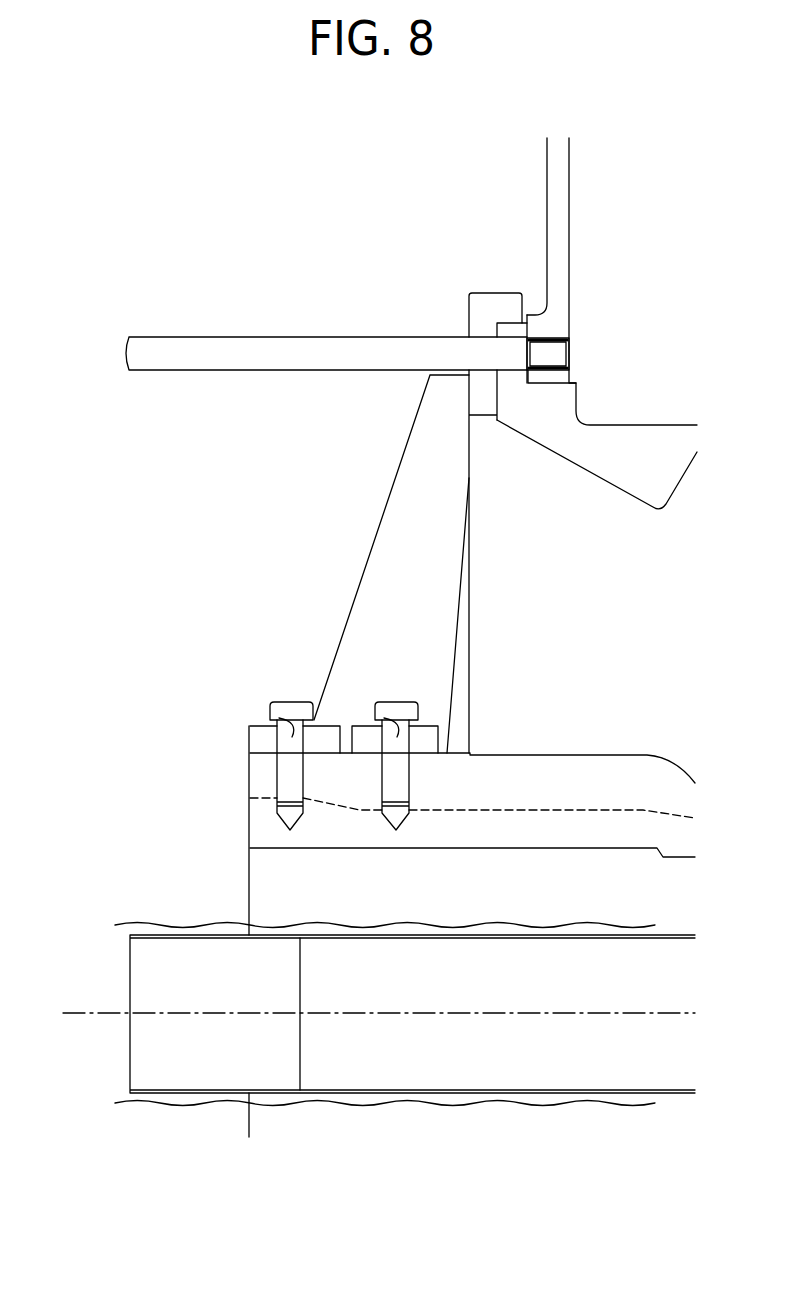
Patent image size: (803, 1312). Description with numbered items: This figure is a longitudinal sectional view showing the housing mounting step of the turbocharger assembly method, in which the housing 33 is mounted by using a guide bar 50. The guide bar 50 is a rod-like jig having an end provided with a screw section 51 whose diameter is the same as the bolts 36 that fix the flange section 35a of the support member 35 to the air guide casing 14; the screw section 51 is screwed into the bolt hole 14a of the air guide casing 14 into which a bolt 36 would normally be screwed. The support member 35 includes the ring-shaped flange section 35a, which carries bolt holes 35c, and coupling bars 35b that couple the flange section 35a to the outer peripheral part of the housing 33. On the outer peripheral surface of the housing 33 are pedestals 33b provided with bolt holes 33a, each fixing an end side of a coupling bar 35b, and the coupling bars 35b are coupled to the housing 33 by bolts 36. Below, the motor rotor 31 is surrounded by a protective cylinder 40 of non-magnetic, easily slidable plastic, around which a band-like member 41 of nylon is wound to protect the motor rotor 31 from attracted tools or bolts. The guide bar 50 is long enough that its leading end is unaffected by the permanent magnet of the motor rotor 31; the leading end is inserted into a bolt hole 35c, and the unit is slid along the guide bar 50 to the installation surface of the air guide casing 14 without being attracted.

The air guide casing 14 is at (622, 470).
The bolt hole 14a is at (532, 362).
The motor rotor 31 is at (370, 1043).
The housing 33 is at (430, 914).
The bolt hole 33a is at (271, 711).
The pedestal 33b is at (265, 748).
The support member 35 is at (418, 472).
The flange section 35a is at (469, 307).
The coupling bar 35b is at (415, 477).
The bolt hole 35c is at (483, 337).
The bolt 36 is at (288, 702).
The protective cylinder 40 is at (130, 1035).
The band-like member 41 is at (158, 1104).
The guide bar 50 is at (184, 355).
The screw section 51 is at (555, 349).